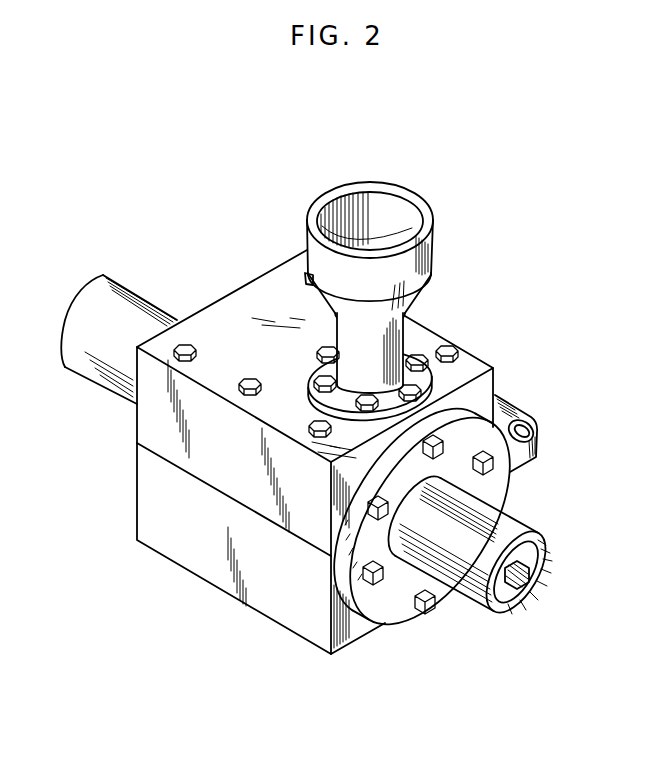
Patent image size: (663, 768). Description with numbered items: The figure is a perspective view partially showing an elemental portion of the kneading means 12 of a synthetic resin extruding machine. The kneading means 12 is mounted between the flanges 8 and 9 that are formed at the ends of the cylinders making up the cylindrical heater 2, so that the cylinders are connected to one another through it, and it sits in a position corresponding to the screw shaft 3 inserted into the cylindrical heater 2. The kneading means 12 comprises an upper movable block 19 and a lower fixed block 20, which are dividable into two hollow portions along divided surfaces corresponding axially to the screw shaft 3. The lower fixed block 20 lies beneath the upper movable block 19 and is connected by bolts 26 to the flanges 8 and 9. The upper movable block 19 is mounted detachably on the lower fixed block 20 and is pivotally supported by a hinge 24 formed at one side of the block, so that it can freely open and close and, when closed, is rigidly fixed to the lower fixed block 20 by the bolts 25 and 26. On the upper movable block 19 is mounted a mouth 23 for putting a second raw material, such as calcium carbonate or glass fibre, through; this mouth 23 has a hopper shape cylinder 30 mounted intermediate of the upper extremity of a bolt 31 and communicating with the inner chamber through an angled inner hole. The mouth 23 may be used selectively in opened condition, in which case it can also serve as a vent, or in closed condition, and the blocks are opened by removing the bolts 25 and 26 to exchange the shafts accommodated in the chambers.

The cylindrical heater 2 is at (507, 521).
The screw shaft 3 is at (532, 578).
The flange 8 is at (485, 432).
The flange 9 is at (222, 286).
The kneading means 12 is at (405, 267).
The upper movable block 19 is at (148, 418).
The lower fixed block 20 is at (148, 466).
The mouth 23 is at (378, 205).
The hinge 24 is at (538, 431).
The bolts 25 is at (250, 381).
The bolts 26 is at (430, 614).
The hopper shape cylinder 30 is at (420, 253).
The bolt 31 is at (411, 383).